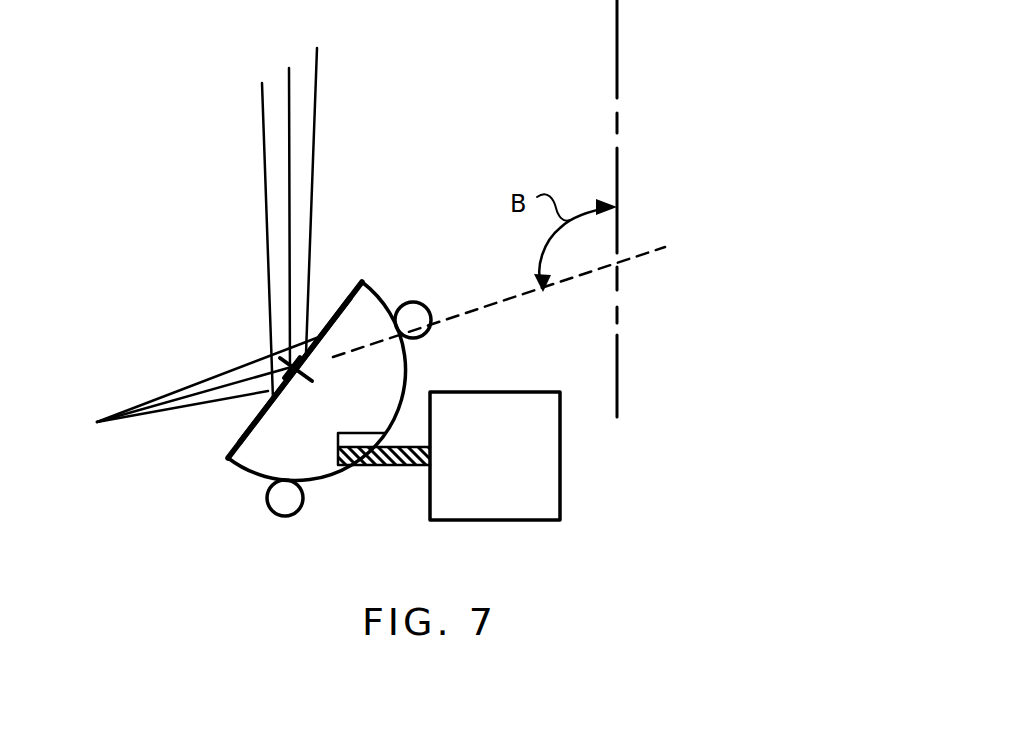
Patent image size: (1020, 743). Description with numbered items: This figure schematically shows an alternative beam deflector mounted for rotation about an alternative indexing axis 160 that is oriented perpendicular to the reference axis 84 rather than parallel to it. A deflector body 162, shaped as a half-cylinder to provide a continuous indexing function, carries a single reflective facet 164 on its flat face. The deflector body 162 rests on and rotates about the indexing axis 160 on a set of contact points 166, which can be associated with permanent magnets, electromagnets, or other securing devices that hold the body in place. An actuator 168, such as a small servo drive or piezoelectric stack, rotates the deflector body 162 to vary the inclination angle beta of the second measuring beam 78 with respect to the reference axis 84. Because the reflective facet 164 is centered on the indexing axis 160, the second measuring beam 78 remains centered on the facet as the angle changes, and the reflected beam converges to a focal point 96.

The second measuring beam 78 is at (320, 168).
The reference axis 84 is at (617, 77).
The focal point 96 is at (97, 422).
The indexing axis 160 is at (290, 380).
The deflector body 162 is at (262, 448).
The reflective facet 164 is at (263, 393).
The contact points 166 is at (395, 300).
The actuator 168 is at (520, 471).